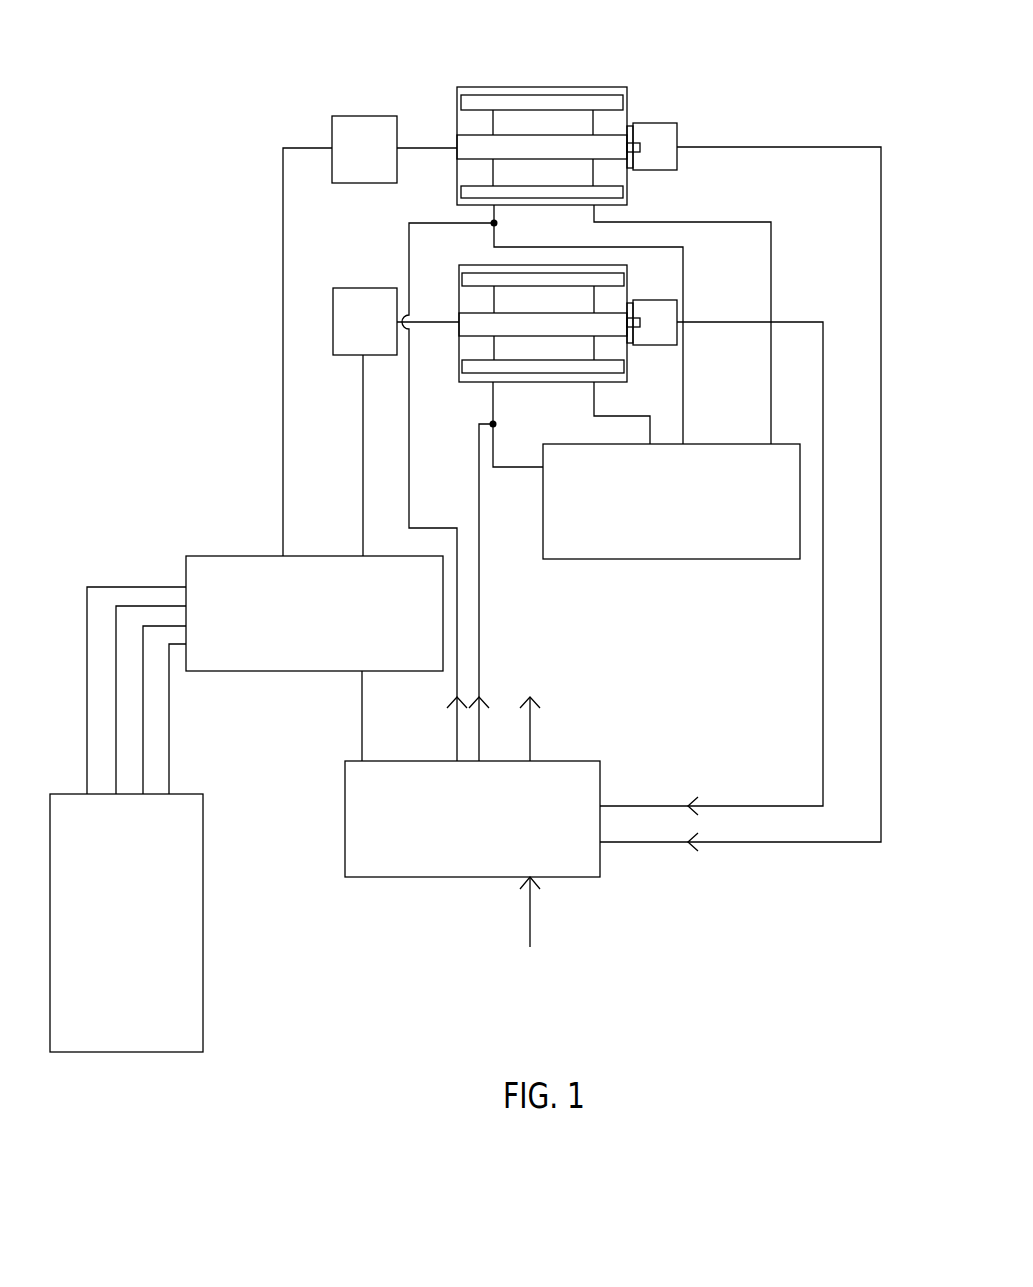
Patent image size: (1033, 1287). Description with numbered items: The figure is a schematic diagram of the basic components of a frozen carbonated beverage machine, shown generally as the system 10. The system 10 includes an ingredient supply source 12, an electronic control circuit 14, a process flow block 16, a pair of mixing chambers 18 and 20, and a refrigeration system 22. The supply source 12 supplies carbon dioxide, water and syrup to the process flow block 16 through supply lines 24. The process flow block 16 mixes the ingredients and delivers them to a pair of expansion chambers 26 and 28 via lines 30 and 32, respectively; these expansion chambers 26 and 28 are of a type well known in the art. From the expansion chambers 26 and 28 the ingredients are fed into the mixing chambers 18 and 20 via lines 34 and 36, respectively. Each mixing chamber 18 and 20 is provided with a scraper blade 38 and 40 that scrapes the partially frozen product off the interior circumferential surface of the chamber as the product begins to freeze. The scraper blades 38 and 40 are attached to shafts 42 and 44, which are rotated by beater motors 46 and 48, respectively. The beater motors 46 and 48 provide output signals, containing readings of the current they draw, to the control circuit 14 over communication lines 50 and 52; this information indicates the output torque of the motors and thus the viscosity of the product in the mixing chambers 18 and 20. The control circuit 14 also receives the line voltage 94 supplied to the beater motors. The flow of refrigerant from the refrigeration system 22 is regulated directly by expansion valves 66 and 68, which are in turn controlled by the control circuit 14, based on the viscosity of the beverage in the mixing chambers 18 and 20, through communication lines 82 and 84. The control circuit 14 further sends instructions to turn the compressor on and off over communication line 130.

The frozen carbonated beverage machine 10 is at (113, 392).
The ingredient supply source 12 is at (50, 783).
The electronic control circuit 14 is at (366, 869).
The process flow block 16 is at (210, 672).
The mixing chamber 18 is at (542, 115).
The mixing chamber 20 is at (547, 305).
The refrigeration system 22 is at (593, 547).
The supply lines 24 is at (114, 580).
The expansion chamber 26 is at (360, 116).
The expansion chamber 28 is at (363, 288).
The line 30 is at (283, 243).
The line 32 is at (362, 435).
The line 34 is at (423, 148).
The line 36 is at (427, 328).
The scraper blade 38 is at (543, 101).
The scraper blade 40 is at (509, 368).
The shaft 42 is at (587, 146).
The shaft 44 is at (601, 322).
The beater motor 46 is at (657, 128).
The beater motor 48 is at (662, 307).
The communication line 50 is at (881, 826).
The communication line 52 is at (823, 760).
The expansion valve 66 is at (494, 223).
The expansion valve 68 is at (493, 424).
The communication line 82 is at (456, 719).
The communication line 84 is at (480, 600).
The line voltage 94 is at (531, 905).
The communication line 130 is at (531, 750).